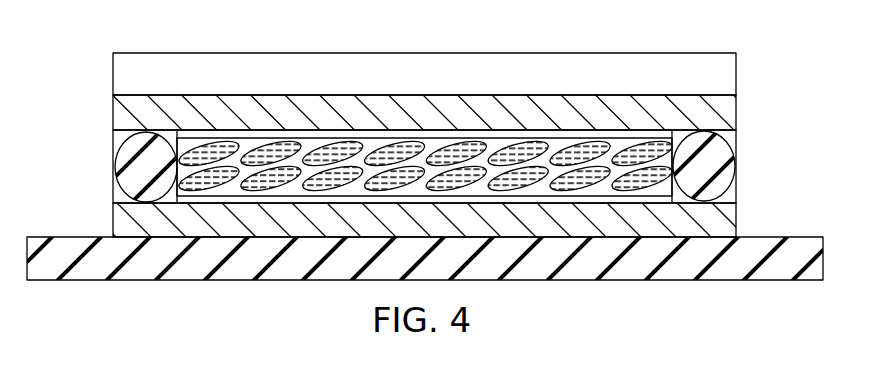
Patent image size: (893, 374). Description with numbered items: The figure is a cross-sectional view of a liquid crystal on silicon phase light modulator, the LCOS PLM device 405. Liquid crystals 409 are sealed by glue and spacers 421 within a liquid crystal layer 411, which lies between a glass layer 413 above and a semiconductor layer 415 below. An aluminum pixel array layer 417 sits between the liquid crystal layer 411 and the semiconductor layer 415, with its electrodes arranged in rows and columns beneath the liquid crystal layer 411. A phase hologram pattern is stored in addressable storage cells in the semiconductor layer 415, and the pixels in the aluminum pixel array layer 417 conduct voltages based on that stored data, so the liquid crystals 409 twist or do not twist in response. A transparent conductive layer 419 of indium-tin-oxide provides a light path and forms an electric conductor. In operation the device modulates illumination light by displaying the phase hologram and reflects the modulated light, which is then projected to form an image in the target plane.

The LCOS PLM device 405 is at (828, 53).
The liquid crystals 409 is at (566, 148).
The liquid crystal layer 411 is at (109, 131).
The glass layer 413 is at (370, 58).
The semiconductor layer 415 is at (285, 270).
The aluminum pixel array layer 417 is at (728, 218).
The transparent conductive layer 419 is at (727, 110).
The glue and spacers 421 is at (722, 148).